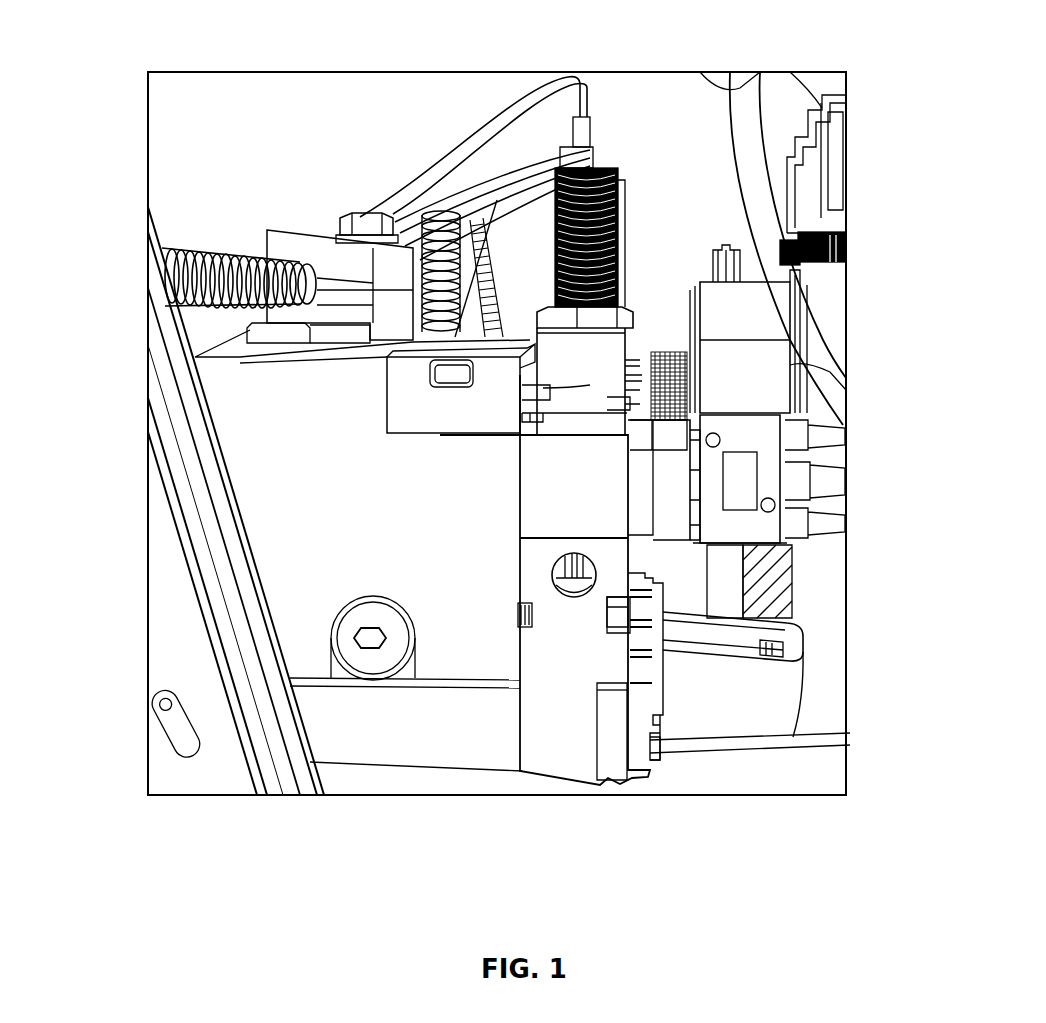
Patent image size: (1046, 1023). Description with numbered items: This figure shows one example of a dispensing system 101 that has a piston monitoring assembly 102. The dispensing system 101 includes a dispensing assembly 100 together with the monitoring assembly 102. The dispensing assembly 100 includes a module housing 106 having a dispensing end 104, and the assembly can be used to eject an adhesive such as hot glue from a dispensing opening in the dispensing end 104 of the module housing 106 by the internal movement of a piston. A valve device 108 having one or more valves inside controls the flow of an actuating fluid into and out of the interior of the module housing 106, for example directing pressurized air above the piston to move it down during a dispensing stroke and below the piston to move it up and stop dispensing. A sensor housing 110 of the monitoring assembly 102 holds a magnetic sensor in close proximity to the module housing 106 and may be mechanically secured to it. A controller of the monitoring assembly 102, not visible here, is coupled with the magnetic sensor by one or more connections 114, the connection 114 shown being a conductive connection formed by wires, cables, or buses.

The dispensing assembly 100 is at (870, 290).
The dispensing system 101 is at (128, 60).
The piston monitoring assembly 102 is at (140, 115).
The dispensing end 104 is at (577, 797).
The module housing 106 is at (572, 642).
The valve device 108 is at (733, 310).
The sensor housing 110 is at (585, 350).
The connection 114 is at (540, 108).